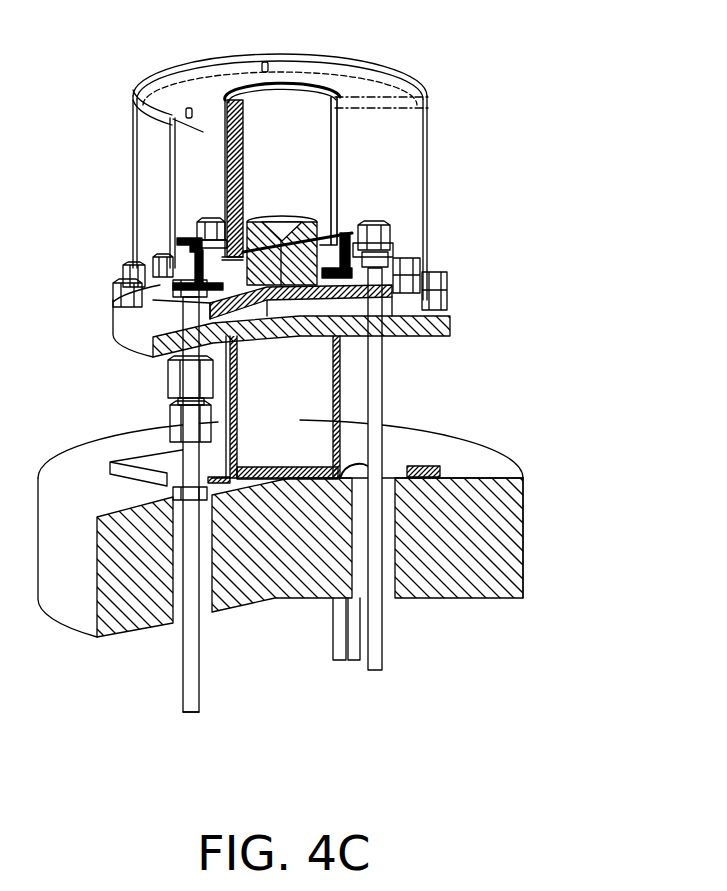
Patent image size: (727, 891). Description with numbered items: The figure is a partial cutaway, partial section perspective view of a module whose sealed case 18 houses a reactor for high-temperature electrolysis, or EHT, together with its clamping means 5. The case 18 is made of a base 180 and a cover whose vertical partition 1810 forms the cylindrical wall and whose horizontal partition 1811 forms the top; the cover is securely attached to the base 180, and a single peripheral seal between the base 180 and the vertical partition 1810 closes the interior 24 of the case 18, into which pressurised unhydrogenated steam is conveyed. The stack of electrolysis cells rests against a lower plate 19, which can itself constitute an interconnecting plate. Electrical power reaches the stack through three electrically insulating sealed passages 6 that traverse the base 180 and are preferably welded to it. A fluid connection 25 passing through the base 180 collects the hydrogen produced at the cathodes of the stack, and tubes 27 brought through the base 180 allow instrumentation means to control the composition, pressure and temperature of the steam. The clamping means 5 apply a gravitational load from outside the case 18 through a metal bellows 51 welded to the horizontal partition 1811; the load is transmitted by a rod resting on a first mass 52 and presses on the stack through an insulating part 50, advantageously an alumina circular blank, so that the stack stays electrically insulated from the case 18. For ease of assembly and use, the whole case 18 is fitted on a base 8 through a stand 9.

The clamping means 5 is at (236, 171).
The electrically insulating sealed passage 6 is at (177, 381).
The base 8 is at (510, 535).
The stand 9 is at (336, 393).
The case 18 is at (125, 145).
The lower plate 19 is at (365, 275).
The interior 24 is at (212, 183).
The fluid connection 25 is at (375, 650).
The tube 27 is at (338, 640).
The insulating part 50 is at (258, 280).
The metal bellows 51 is at (342, 180).
The first mass 52 is at (285, 215).
The base 180 is at (435, 328).
The vertical partition 1810 is at (428, 170).
The horizontal partition 1811 is at (363, 90).
The high-temperature electrolysis EHT is at (337, 303).